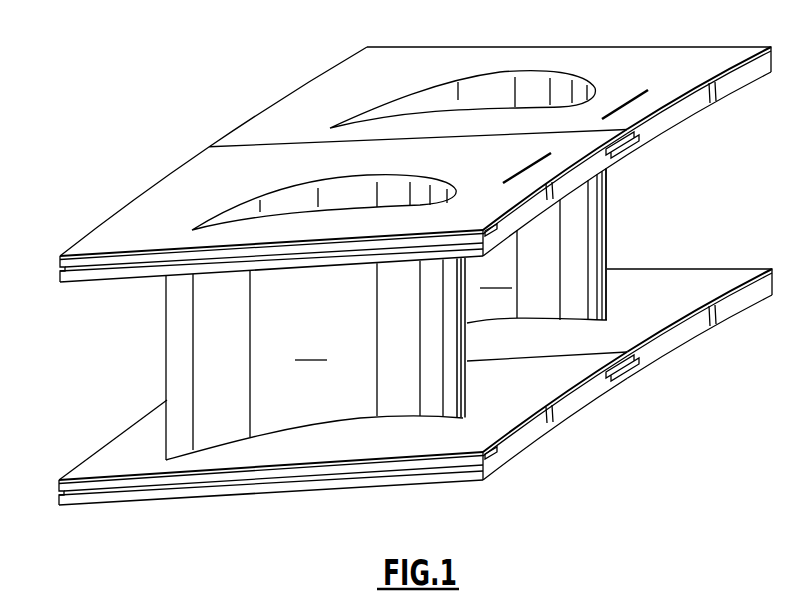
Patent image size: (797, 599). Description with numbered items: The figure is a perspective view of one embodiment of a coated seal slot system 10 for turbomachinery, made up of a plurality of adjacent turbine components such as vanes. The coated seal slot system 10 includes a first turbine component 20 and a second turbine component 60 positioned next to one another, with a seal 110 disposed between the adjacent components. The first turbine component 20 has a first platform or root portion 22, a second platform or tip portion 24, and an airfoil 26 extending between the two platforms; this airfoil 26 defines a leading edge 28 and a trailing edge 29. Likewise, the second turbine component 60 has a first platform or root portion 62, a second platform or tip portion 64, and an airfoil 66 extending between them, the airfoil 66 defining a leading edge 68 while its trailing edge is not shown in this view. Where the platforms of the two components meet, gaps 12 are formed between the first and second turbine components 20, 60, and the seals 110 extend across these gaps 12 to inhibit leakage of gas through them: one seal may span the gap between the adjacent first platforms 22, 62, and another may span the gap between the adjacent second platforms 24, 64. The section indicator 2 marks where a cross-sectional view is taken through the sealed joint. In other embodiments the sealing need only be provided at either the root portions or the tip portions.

The gas turbine engine vane assembly 10 is at (86, 74).
The joint between vane segments 12 is at (290, 137).
The first vane segment 20 is at (80, 190).
The inner platform of first segment 22 is at (107, 444).
The outer platform of first segment 24 is at (87, 230).
The airfoil of first segment 26 is at (315, 359).
The inner platform mating edge 28 is at (470, 361).
The leading edge of airfoil 29 is at (166, 335).
The second vane segment 60 is at (231, 82).
The inner platform of second segment 62 is at (720, 268).
The outer platform of second segment 64 is at (237, 125).
The airfoil of second segment 66 is at (537, 252).
The trailing edge of second airfoil 68 is at (607, 287).
The locking tab 110 is at (630, 143).
The section line 2- 2 is at (599, 122).